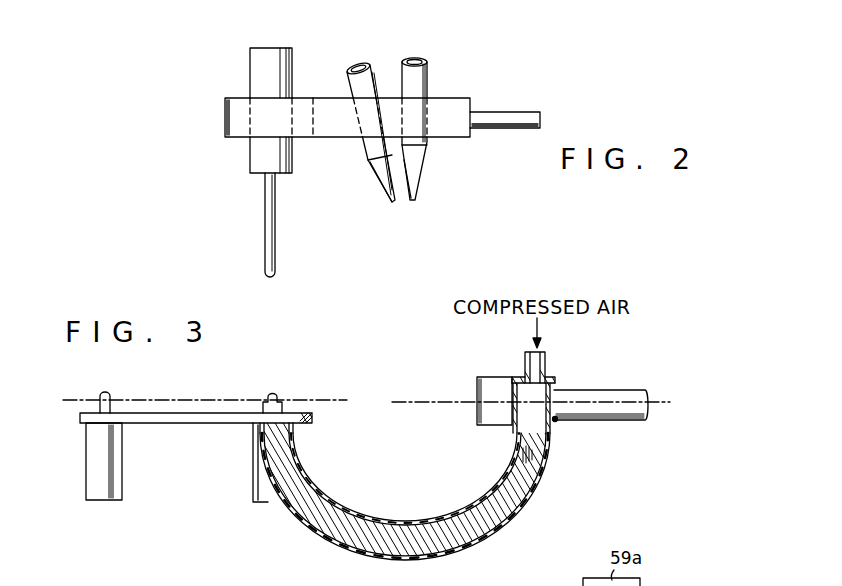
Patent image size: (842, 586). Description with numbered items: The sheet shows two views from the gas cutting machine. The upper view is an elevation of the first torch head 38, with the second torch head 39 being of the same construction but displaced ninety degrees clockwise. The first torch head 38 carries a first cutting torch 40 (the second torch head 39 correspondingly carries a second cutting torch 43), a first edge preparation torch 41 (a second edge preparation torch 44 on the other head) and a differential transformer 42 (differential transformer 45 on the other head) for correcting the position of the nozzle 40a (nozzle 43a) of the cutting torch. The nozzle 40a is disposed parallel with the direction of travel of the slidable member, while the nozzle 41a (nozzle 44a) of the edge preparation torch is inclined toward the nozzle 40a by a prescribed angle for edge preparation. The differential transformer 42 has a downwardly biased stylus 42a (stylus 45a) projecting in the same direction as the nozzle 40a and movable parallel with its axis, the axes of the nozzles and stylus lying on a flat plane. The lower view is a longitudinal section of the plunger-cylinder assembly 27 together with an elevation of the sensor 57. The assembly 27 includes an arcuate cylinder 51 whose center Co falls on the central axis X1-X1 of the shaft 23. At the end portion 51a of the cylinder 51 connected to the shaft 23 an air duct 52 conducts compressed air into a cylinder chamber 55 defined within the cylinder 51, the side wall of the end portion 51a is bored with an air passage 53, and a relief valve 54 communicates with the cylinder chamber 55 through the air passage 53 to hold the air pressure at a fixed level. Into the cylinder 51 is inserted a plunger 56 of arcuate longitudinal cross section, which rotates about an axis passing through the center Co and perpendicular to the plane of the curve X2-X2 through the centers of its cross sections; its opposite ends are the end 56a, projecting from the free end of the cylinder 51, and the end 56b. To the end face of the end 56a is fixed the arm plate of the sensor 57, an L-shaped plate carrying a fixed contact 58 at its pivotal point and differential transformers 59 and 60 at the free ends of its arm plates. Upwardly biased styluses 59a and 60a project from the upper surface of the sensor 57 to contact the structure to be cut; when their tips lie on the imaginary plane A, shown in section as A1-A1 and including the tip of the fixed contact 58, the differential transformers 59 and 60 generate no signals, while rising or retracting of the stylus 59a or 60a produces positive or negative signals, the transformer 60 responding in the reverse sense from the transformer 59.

In FIG. 2, the first torch head 38 is at (448, 110).
In FIG. 2, the second torch head 39 is at (382, 104).
In FIG. 2, the first cutting torch 40 is at (415, 76).
In FIG. 2, the second cutting torch 43 is at (457, 122).
In FIG. 2, the nozzle 40a is at (422, 165).
In FIG. 2, the nozzle 43a is at (458, 179).
In FIG. 2, the first edge preparation torch 41 is at (355, 72).
In FIG. 2, the second edge preparation torch 44 is at (364, 136).
In FIG. 2, the nozzle 41a is at (380, 190).
In FIG. 2, the nozzle 44a is at (353, 202).
In FIG. 2, the differential transformer 42 is at (270, 56).
In FIG. 2, the differential transformer 45 is at (286, 94).
In FIG. 2, the stylus 42a is at (276, 263).
In FIG. 2, the stylus 45a is at (317, 226).
In FIG. 3, the shaft 23 is at (629, 391).
In FIG. 3, the plunger-cylinder assembly 27 is at (520, 516).
In FIG. 3, the arcuate cylinder 51 is at (399, 478).
In FIG. 3, the end portion 51a is at (556, 419).
In FIG. 3, the air duct 52 is at (547, 372).
In FIG. 3, the air passage 53 is at (520, 413).
In FIG. 3, the relief valve 54 is at (500, 384).
In FIG. 3, the cylinder chamber 55 is at (547, 450).
In FIG. 3, the plunger 56 is at (340, 530).
In FIG. 3, the one end of the plunger 56a is at (288, 432).
In FIG. 3, the hose wall right end 56b is at (512, 453).
In FIG. 3, the sensor 57 is at (200, 419).
In FIG. 3, the fixed contact 58 is at (305, 415).
In FIG. 3, the differential transformer 59 is at (256, 489).
In FIG. 3, the stylus 59a is at (271, 394).
In FIG. 3, the differential transformer 60 is at (108, 472).
In FIG. 3, the stylus 60a is at (106, 393).
In FIG. 3, the imaginary plane A is at (194, 400).
In FIG. 3, the cross section of plane A A1 is at (201, 404).
In FIG. 3, the central axis of the shaft X1 is at (532, 405).
In FIG. 3, the curve through plunger cross-section centers X2 is at (275, 436).
In FIG. 3, the center Co is at (403, 406).